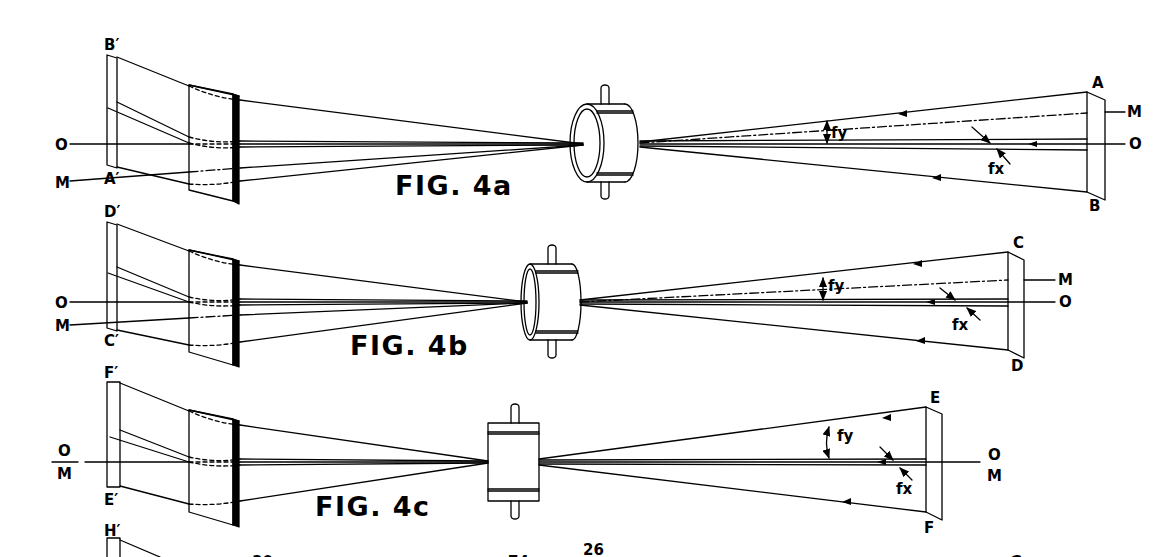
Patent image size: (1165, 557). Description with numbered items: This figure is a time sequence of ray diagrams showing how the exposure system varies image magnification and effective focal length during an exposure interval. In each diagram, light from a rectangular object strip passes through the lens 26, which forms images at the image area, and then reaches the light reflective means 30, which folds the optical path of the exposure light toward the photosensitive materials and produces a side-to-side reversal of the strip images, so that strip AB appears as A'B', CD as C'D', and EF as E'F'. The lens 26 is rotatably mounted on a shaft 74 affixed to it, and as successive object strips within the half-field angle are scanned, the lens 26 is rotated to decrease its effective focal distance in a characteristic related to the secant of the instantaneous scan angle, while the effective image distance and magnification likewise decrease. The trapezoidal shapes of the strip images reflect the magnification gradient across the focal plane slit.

In FIG. 4a, the light reflective means 30 is at (217, 93).
In FIG. 4b, the light reflective means 30 is at (217, 260).
In FIG. 4c, the light reflective means 30 is at (217, 420).
In FIG. 4a, the lens 26 is at (642, 111).
In FIG. 4b, the lens 26 is at (585, 273).
In FIG. 4c, the lens 26 is at (547, 437).
In FIG. 4a, the shaft 74 is at (603, 98).
In FIG. 4b, the shaft 74 is at (550, 258).
In FIG. 4c, the shaft 74 is at (513, 415).